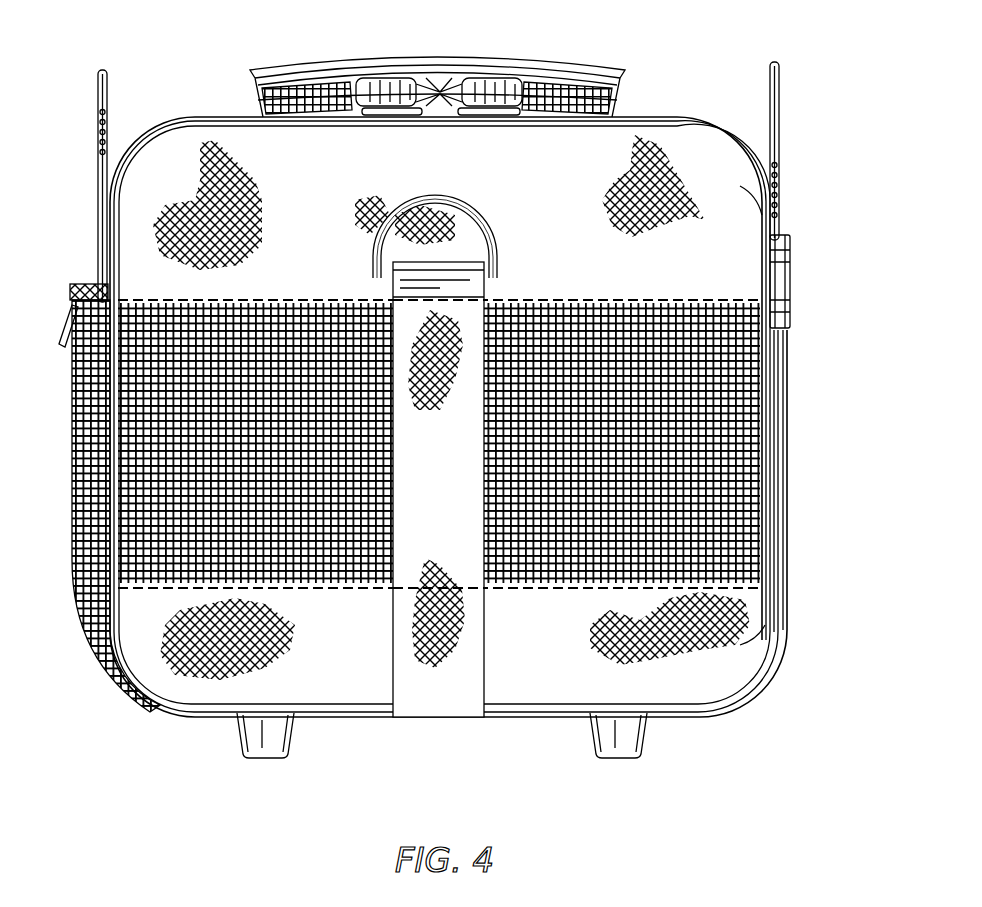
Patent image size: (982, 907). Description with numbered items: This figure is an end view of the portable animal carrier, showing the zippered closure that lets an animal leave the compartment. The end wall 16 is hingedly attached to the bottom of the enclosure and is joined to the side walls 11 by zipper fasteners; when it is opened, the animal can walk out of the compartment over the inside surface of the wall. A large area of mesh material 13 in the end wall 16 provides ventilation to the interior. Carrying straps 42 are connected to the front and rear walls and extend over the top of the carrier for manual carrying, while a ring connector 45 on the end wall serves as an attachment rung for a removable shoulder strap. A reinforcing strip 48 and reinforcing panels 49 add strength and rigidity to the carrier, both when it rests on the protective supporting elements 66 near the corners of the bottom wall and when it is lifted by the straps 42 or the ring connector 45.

The side wall 11 is at (120, 153).
The mesh material portion 13 is at (770, 523).
The end wall 16 is at (339, 186).
The strap 42 is at (107, 86).
The ring connector 45 is at (500, 250).
The reinforcing strip 48 is at (451, 503).
The reinforcing panel 49 is at (737, 189).
The protective supporting element 66 is at (590, 730).